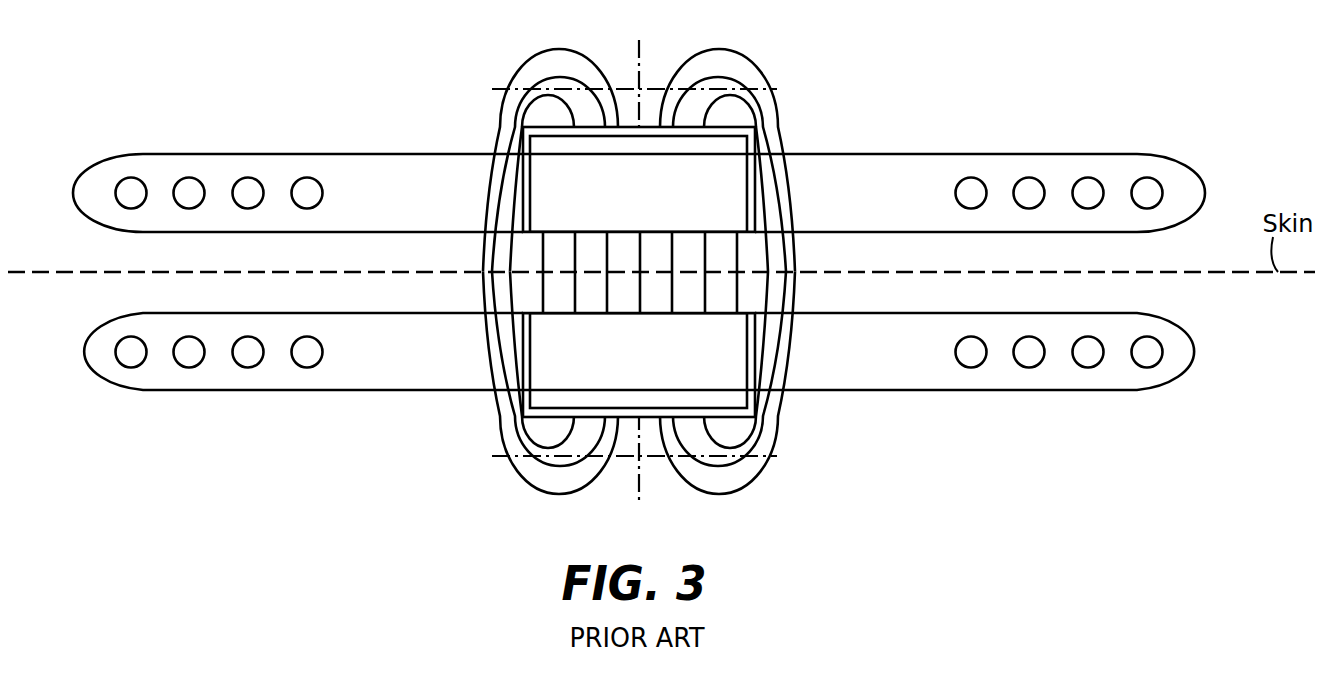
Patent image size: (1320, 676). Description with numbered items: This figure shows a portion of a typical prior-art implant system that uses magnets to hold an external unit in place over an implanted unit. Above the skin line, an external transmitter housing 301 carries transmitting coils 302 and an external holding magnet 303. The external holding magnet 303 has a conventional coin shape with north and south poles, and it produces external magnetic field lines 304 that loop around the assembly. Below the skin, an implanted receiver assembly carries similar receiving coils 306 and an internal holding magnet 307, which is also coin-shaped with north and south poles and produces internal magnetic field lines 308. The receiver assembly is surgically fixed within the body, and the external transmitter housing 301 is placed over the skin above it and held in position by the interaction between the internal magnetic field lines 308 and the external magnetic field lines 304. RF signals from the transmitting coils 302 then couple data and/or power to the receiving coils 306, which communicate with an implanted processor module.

The external transmitter housing 301 is at (432, 456).
The transmitting coils 302 is at (1147, 192).
The external holding magnet 303 is at (543, 204).
The external magnetic field lines 304 is at (724, 50).
The receiving coils 306 is at (1144, 357).
The internal holding magnet 307 is at (541, 374).
The internal magnetic field lines 308 is at (745, 480).